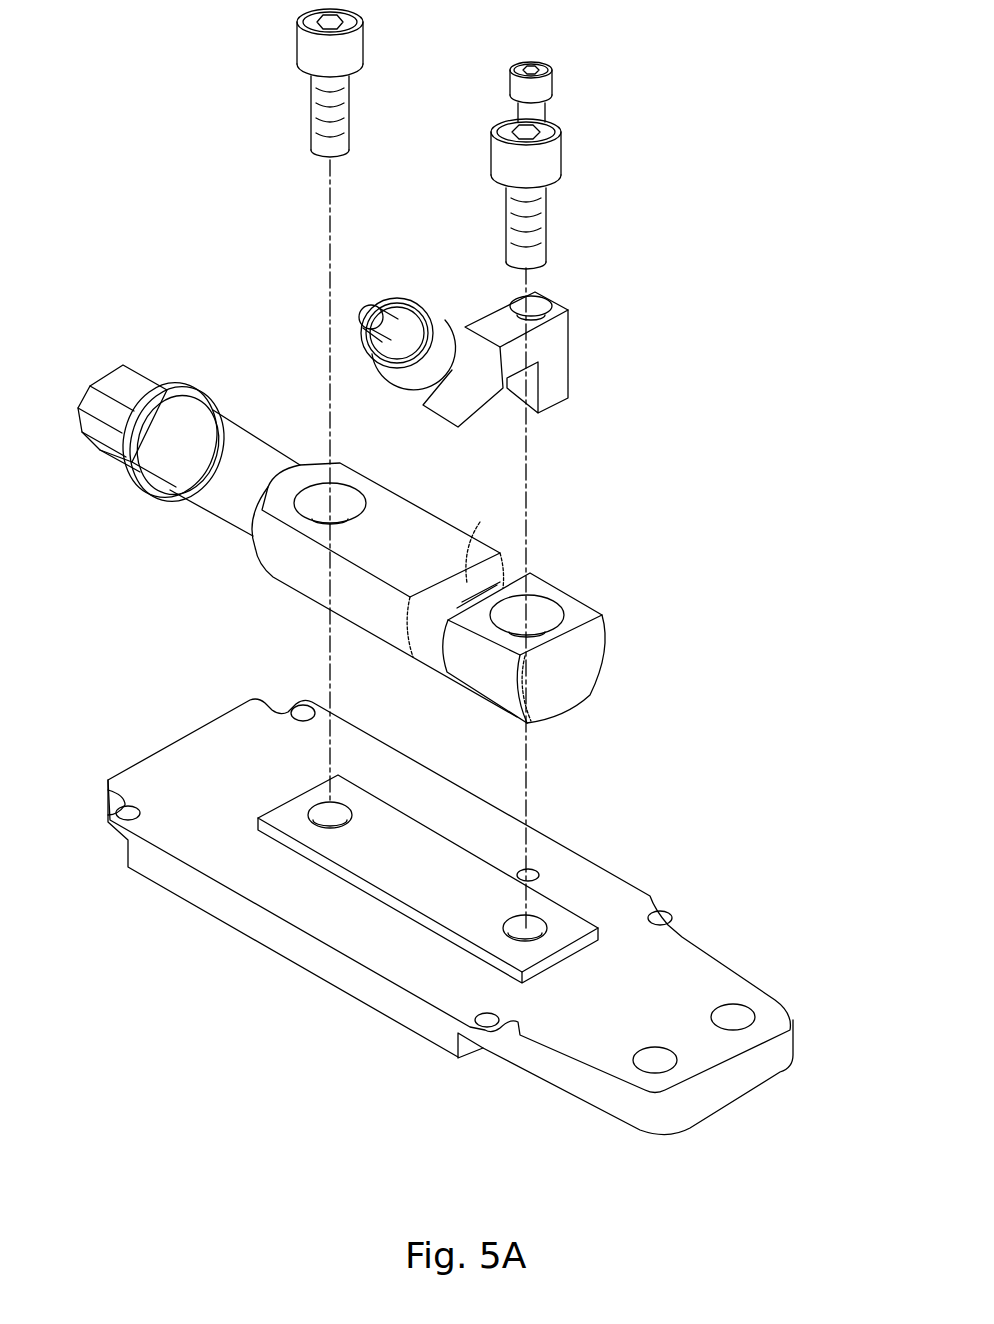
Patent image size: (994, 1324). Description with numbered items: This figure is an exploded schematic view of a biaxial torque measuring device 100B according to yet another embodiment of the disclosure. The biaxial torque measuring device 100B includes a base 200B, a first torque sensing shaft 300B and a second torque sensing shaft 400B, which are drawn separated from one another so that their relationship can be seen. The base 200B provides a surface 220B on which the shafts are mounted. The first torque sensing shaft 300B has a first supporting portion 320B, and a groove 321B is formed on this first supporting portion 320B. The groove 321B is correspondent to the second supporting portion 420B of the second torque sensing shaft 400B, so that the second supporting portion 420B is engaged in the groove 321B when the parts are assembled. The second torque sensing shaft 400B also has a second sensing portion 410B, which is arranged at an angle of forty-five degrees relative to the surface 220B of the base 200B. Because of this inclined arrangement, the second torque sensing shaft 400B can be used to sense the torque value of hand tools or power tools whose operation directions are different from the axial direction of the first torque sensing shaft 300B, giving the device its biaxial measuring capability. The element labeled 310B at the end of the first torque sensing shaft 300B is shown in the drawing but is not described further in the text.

The biaxial torque measuring device 100B is at (148, 75).
The base 200B is at (765, 1015).
The surface 220B is at (685, 977).
The first torque sensing shaft 300B is at (251, 455).
The hex head 310B is at (121, 385).
The first supporting portion 320B is at (577, 670).
The groove 321B is at (493, 523).
The second torque sensing shaft 400B is at (483, 353).
The second sensing portion 410B is at (365, 305).
The second supporting portion 420B is at (557, 378).